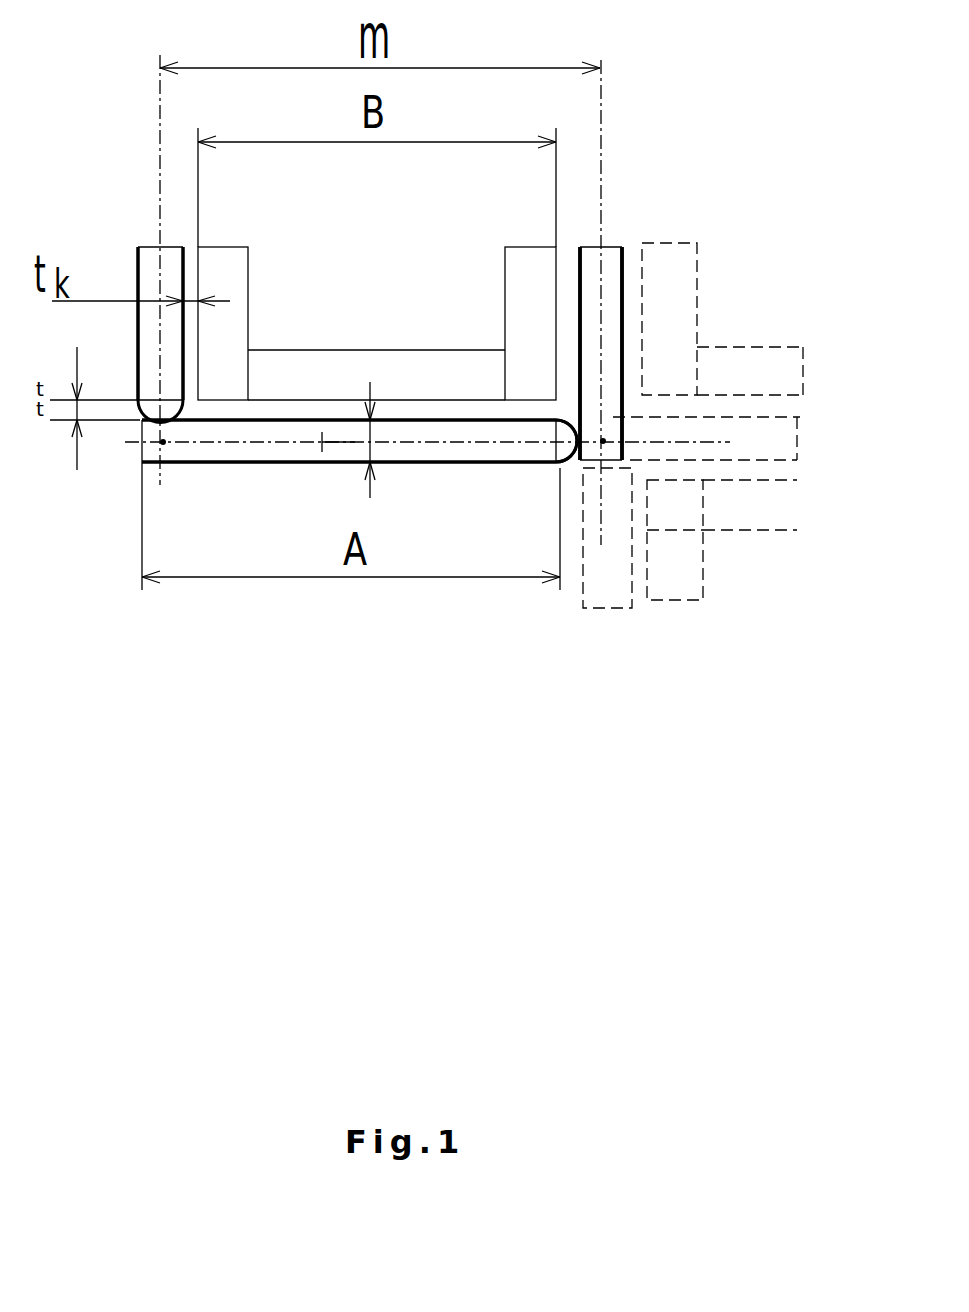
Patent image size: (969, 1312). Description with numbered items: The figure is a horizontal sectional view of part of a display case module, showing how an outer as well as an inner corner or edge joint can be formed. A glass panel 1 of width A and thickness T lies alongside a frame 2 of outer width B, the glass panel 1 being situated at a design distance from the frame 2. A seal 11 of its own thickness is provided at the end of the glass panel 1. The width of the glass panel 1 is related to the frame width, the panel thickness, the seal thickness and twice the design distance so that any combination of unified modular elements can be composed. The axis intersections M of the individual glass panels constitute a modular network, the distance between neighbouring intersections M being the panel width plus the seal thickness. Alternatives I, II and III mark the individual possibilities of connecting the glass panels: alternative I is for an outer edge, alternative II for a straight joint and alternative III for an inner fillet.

The glass panel 1 is at (302, 438).
The frame 2 is at (237, 275).
The seal 11 is at (578, 443).
The alternative I is at (601, 335).
The alternative II is at (687, 442).
The alternative III is at (612, 550).
The axis intersection M is at (163, 442).